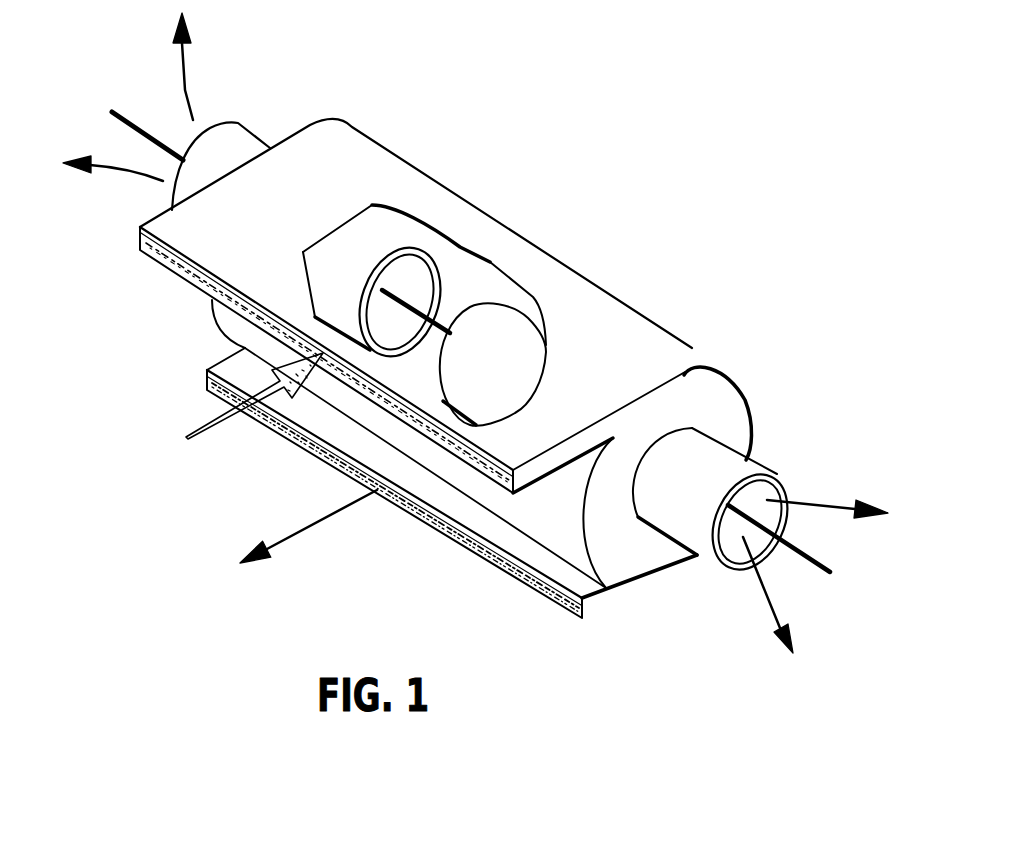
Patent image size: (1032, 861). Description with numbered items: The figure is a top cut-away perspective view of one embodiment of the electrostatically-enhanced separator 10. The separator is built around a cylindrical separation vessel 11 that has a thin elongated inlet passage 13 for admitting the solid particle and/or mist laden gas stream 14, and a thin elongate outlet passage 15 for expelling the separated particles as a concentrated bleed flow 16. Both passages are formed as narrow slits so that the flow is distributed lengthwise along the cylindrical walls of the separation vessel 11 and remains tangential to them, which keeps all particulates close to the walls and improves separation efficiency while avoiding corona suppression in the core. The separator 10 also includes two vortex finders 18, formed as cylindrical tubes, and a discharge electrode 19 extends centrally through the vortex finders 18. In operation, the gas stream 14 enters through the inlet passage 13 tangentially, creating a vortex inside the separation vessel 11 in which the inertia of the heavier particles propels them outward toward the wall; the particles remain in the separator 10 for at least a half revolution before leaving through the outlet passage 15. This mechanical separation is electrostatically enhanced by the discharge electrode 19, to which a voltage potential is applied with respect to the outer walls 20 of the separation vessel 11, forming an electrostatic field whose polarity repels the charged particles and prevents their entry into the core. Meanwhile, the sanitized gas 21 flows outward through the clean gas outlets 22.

The electrostatically-enhanced separator 10 is at (470, 334).
The separation vessel 11 is at (372, 163).
The inlet passage 13 is at (452, 486).
The gas stream 14 is at (185, 435).
The outlet passage 15 is at (558, 596).
The bleed flow 16 is at (287, 540).
The vortex finders 18 is at (340, 250).
The discharge electrode 19 is at (117, 108).
The outer walls 20 is at (752, 413).
The sanitized gas 21 is at (186, 92).
The clean gas outlets 22 is at (188, 143).